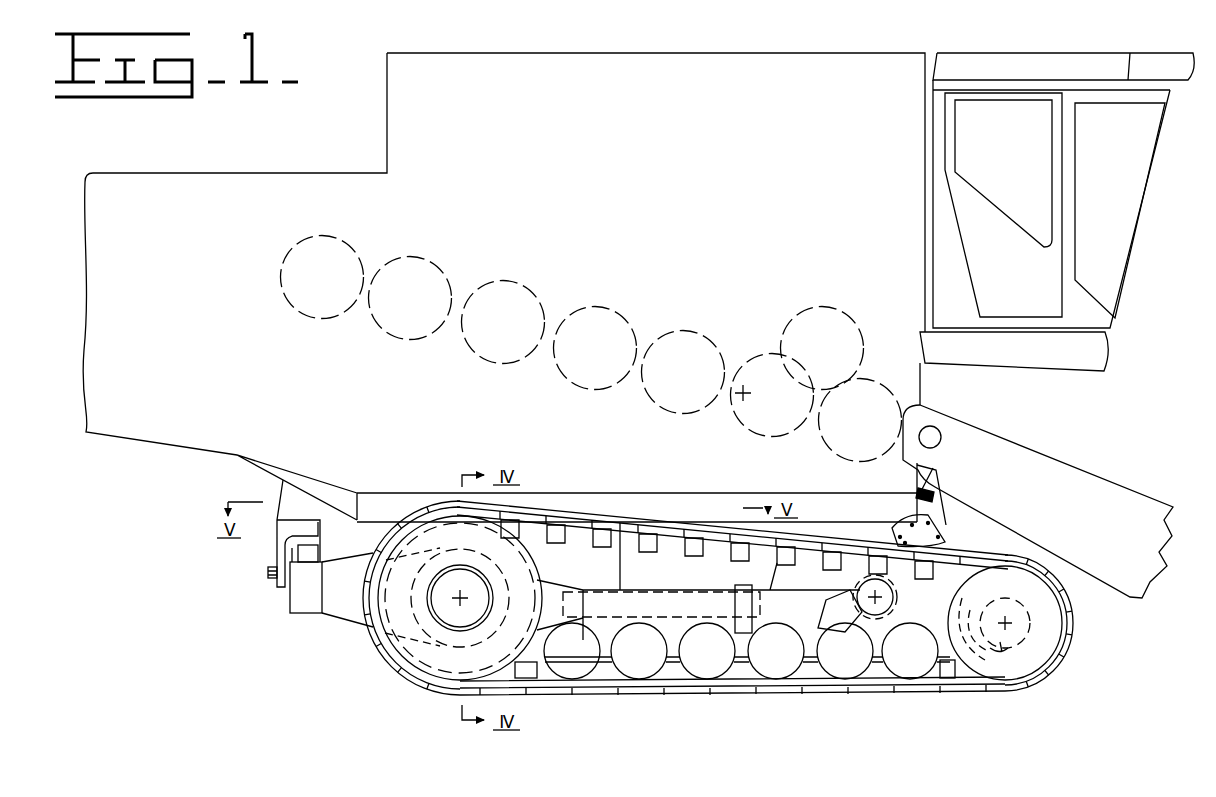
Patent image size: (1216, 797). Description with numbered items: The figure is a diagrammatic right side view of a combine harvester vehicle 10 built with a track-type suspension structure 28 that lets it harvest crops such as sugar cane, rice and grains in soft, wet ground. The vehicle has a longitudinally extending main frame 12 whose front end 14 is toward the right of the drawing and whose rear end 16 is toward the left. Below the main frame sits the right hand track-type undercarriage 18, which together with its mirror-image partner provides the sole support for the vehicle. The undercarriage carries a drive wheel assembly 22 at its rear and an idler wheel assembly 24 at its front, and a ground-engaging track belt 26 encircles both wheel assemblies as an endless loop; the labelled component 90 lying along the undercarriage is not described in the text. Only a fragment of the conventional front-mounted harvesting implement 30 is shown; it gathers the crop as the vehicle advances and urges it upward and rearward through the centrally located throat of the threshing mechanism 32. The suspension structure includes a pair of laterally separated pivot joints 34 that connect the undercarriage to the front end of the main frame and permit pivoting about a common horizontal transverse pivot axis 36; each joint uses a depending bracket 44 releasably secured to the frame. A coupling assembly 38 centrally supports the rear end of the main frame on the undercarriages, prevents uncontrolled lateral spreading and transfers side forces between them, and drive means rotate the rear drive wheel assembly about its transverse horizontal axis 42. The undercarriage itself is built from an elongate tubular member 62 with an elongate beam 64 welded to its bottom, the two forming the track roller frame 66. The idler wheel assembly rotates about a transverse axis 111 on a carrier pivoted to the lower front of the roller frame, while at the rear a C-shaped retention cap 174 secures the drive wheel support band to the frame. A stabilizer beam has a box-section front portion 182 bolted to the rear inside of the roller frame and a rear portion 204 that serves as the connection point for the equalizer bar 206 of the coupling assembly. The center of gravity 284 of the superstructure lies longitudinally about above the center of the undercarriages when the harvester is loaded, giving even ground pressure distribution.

The combine harvester vehicle 10 is at (1146, 226).
The main frame 12 is at (932, 495).
The front end 14 is at (820, 496).
The rear end 16 is at (397, 493).
The right hand track-type undercarriage 18 is at (558, 499).
The drive wheel assembly 22 is at (390, 656).
The idler wheel assembly 24 is at (1027, 562).
The track belt 26 is at (705, 692).
The suspension structure 28 is at (286, 603).
The front-mounted harvesting implement 30 is at (985, 430).
The threshing mechanism 32 is at (675, 326).
The pivot joints 34 is at (860, 644).
The pivot axis 36 is at (857, 602).
The coupling assembly 38 is at (266, 564).
The drive wheel axis 42 is at (463, 597).
The depending bracket 44 is at (940, 538).
The elongate tubular member 62 is at (797, 607).
The elongate beam 64 is at (820, 672).
The track roller frame 66 is at (672, 580).
The road wheel 90 is at (577, 667).
The transverse axis 111 is at (1008, 625).
The C-shaped retention cap 174 is at (368, 632).
The front portion of stabilizer beam 182 is at (613, 639).
The rear portion of stabilizer beam 204 is at (340, 606).
The equalizer bar 206 is at (322, 553).
The center of gravity 284 is at (746, 394).